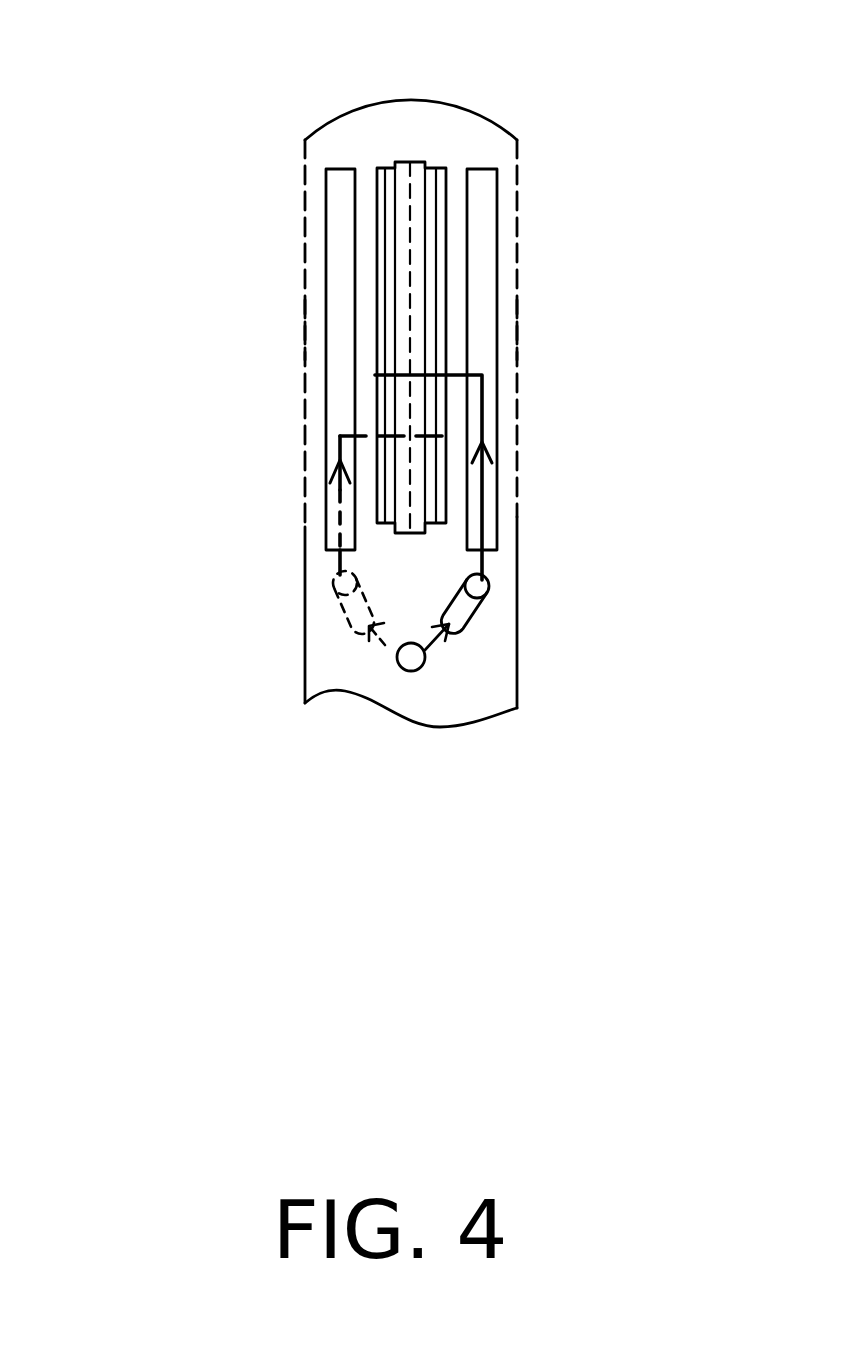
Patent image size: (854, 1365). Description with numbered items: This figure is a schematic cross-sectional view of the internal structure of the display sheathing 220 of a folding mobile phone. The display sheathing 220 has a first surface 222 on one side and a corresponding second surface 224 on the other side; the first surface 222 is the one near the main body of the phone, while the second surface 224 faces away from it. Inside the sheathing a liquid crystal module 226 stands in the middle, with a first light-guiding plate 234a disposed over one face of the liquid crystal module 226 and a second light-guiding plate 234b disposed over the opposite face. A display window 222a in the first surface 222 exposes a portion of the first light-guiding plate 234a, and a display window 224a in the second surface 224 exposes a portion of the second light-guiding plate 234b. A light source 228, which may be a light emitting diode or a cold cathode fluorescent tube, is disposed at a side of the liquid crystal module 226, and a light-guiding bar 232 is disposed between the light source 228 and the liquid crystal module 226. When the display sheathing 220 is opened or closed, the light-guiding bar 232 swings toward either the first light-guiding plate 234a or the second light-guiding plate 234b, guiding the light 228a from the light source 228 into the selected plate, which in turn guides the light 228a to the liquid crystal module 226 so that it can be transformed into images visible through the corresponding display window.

The display sheathing 220 is at (368, 130).
The first surface 222 is at (306, 138).
The display window 222a is at (305, 327).
The second surface 224 is at (518, 142).
The display window 224a is at (517, 325).
The liquid crystal module 226 is at (420, 168).
The light source 228 is at (397, 660).
The light 228a is at (340, 500).
The light-guiding bar 232 is at (480, 587).
The first light-guiding plate 234a is at (340, 243).
The second light-guiding plate 234b is at (483, 237).